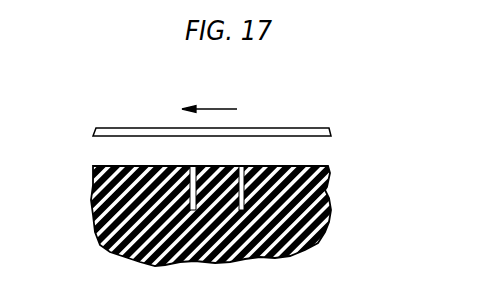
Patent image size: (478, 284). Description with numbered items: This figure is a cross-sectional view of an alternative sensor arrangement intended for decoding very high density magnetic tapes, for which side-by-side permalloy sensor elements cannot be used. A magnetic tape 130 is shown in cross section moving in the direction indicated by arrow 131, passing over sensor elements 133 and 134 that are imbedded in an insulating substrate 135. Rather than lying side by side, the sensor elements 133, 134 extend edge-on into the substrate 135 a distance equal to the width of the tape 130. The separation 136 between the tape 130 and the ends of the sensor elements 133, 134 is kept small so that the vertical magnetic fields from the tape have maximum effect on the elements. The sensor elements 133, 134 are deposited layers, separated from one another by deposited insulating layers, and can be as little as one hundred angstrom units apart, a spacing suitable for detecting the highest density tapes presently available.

The magnetic tape 130 is at (117, 130).
The arrow 131 is at (216, 108).
The sensor element 133 is at (250, 177).
The sensor element 134 is at (190, 169).
The insulating substrate 135 is at (324, 188).
The separation 136 is at (102, 152).